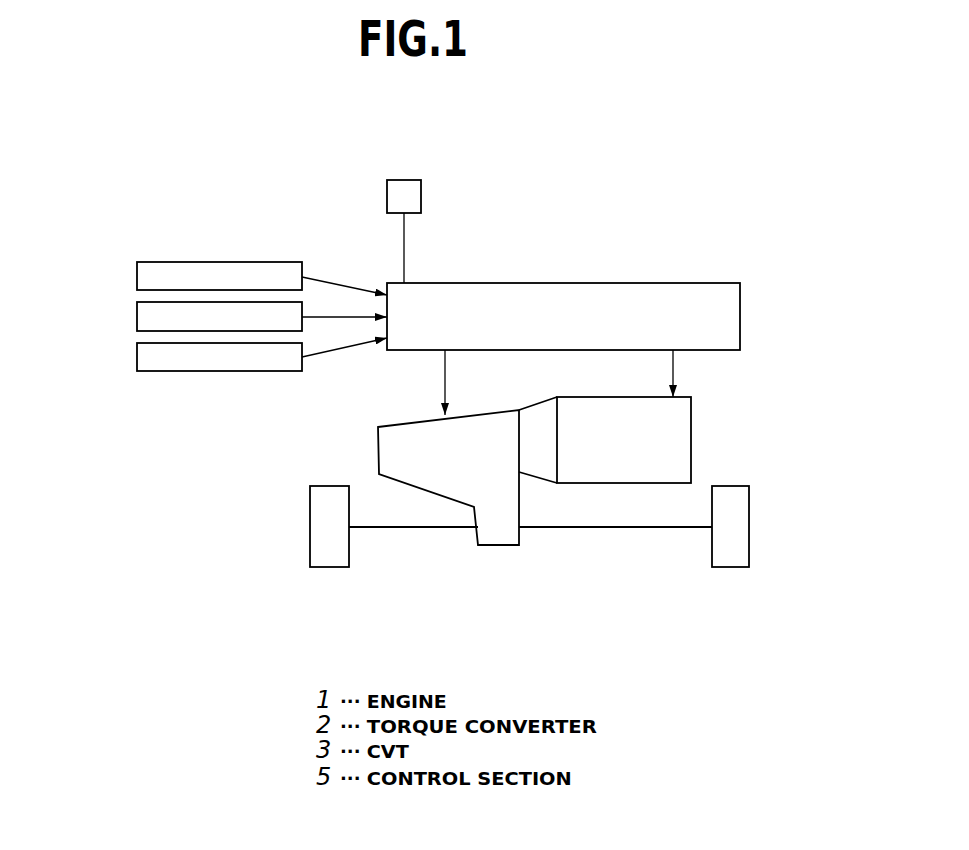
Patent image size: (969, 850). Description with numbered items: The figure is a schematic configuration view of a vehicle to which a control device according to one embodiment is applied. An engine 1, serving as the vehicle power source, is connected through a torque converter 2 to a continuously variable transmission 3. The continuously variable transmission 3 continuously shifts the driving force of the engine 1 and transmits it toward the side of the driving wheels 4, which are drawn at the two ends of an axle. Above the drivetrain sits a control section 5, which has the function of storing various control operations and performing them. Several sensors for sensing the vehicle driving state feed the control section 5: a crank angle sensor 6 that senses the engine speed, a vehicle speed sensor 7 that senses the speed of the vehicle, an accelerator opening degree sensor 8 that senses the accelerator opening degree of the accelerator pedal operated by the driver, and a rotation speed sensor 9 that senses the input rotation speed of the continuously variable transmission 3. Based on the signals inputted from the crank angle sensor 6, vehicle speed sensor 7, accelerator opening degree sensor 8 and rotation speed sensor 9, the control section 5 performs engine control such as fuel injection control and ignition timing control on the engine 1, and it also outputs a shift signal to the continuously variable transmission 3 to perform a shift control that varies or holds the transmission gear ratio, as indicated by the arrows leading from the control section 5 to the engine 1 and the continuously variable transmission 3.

The engine 1 is at (690, 426).
The torque converter 2 is at (540, 411).
The continuously variable transmission 3 is at (413, 427).
The driving wheels 4 is at (331, 568).
The control section 5 is at (545, 283).
The crank angle sensor 6 is at (405, 180).
The vehicle speed sensor 7 is at (137, 356).
The accelerator opening degree sensor 8 is at (137, 316).
The rotation speed sensor 9 is at (137, 276).